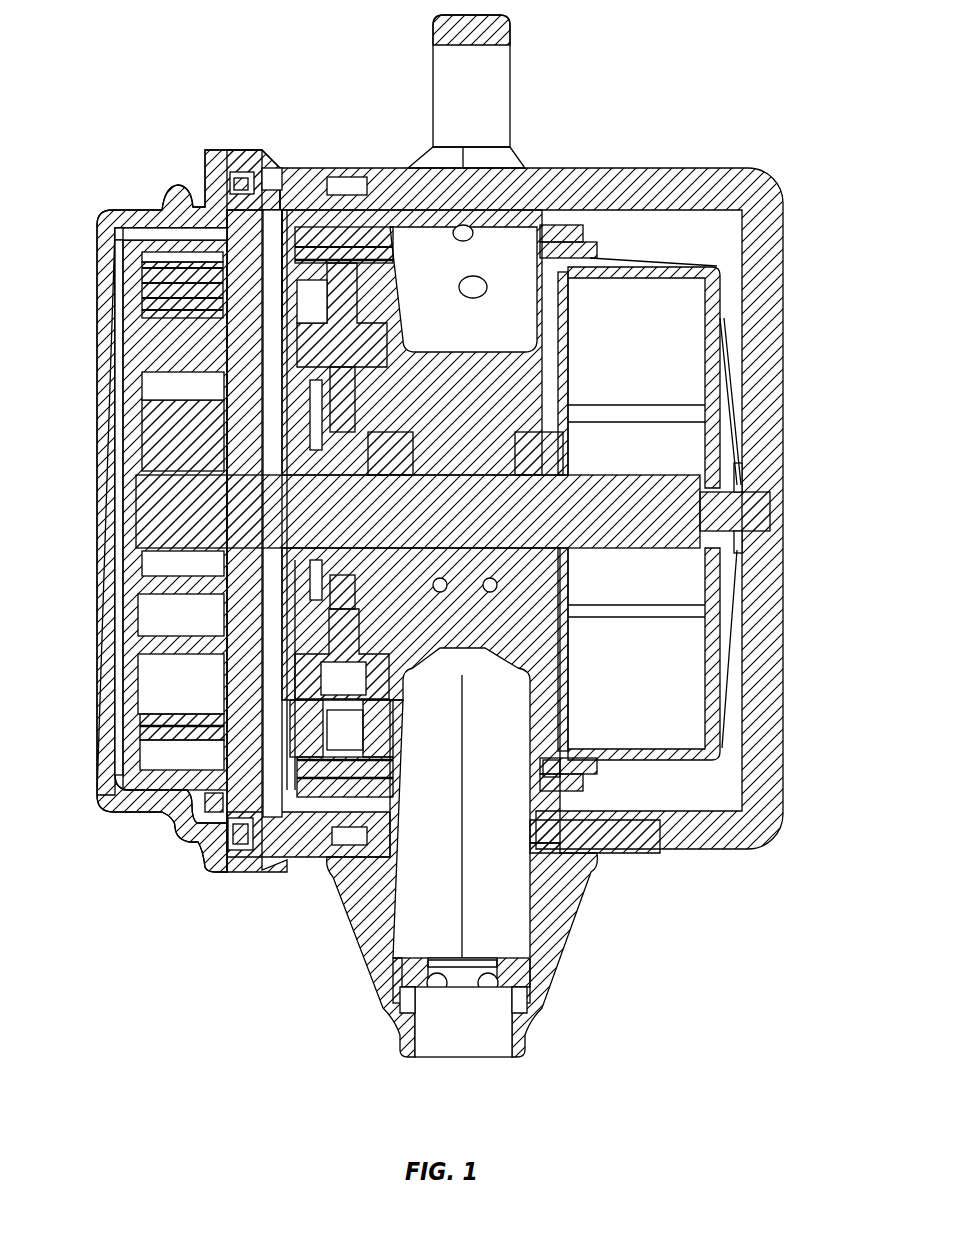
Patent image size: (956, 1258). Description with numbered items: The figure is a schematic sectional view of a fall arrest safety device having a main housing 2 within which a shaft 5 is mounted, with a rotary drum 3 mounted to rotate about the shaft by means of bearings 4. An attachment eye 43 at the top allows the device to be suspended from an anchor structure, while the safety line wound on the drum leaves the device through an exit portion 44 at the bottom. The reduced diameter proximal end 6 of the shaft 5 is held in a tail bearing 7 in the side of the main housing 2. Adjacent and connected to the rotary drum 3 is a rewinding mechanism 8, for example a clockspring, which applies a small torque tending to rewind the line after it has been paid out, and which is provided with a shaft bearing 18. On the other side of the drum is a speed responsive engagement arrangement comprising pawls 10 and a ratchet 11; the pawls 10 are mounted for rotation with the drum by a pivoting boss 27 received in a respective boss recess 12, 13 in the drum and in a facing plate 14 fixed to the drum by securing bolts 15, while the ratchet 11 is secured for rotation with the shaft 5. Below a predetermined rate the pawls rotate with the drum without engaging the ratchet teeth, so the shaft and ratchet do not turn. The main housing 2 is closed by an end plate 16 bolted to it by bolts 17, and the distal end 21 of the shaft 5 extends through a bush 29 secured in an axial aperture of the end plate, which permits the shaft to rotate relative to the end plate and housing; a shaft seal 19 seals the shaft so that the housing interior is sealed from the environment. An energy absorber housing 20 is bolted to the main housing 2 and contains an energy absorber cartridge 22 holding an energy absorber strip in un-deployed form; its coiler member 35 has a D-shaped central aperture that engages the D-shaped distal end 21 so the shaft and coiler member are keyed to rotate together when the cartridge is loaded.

The main housing 2 is at (612, 180).
The rotary drum 3 is at (474, 414).
The bearings 4 is at (396, 466).
The shaft 5 is at (598, 524).
The reduced diameter proximal end 6 is at (751, 507).
The tail bearing 7 is at (753, 488).
The rewinding mechanism 8 is at (618, 325).
The pawl 10 is at (293, 293).
The ratchet 11 is at (355, 430).
The boss recess 12 is at (222, 313).
The boss recess 13 is at (377, 327).
The facing plate 14 is at (297, 313).
The securing bolts 15 is at (367, 253).
The end plate 16 is at (305, 343).
The bolts 17 is at (262, 187).
The shaft bearing 18 is at (719, 484).
The shaft seal 19 is at (239, 463).
The energy absorber housing 20 is at (150, 215).
The distal end 21 is at (197, 524).
The energy absorber cartridge 22 is at (250, 315).
The pivoting boss 27 is at (350, 350).
The bush 29 is at (269, 551).
The coiler member 35 is at (185, 460).
The attachment eye 43 is at (497, 65).
The exit portion 44 is at (485, 1042).